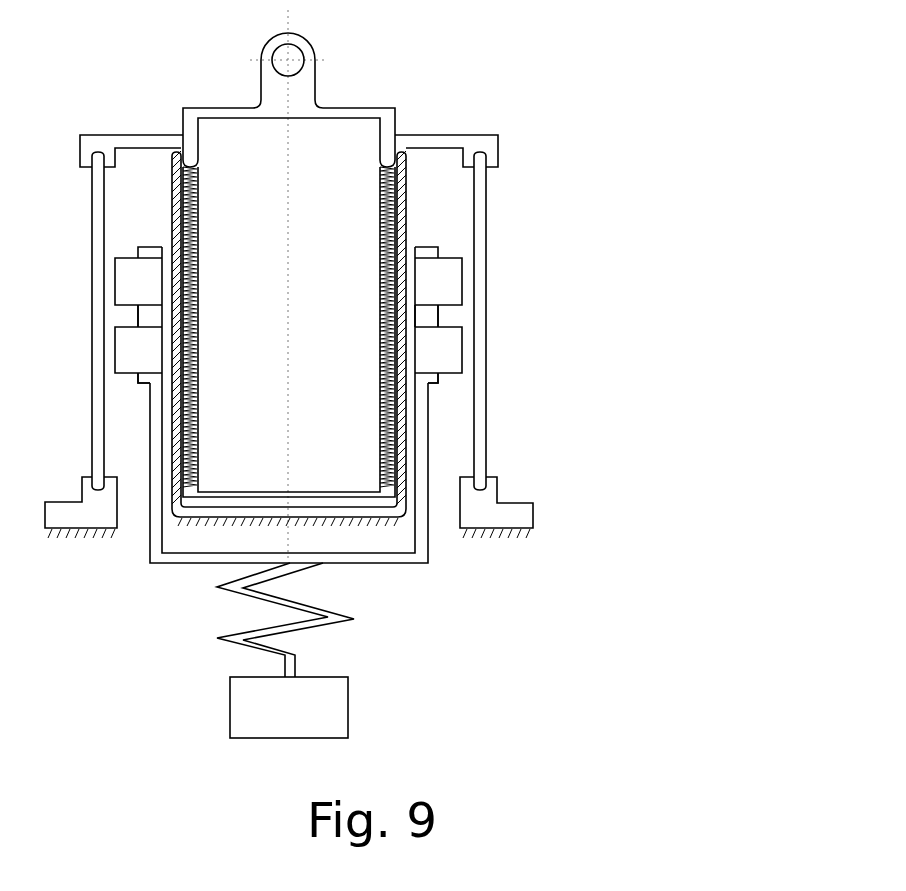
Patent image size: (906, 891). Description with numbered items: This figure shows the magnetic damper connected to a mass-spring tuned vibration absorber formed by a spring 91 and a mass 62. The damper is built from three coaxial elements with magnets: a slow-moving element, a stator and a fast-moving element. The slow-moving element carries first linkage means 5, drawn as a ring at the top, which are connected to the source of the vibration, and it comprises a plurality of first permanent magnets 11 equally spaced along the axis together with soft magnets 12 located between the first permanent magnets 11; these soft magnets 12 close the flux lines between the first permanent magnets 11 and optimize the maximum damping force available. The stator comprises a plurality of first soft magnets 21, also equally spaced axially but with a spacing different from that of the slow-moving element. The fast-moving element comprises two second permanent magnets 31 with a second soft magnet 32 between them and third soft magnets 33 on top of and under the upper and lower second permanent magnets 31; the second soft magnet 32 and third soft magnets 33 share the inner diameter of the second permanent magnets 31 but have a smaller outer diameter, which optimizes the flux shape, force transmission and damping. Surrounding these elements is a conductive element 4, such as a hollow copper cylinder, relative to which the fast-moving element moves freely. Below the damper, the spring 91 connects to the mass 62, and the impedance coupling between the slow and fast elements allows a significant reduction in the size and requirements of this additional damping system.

The first linkage means 5 is at (318, 48).
The soft magnets 12 is at (398, 165).
The first permanent magnets 11 is at (397, 183).
The first soft magnets 21 is at (405, 213).
The conductive element 4 is at (488, 348).
The second permanent magnets 31 is at (464, 258).
The second soft magnet 32 is at (440, 315).
The third soft magnets 33 is at (439, 383).
The spring 91 is at (328, 617).
The mass 62 is at (350, 708).